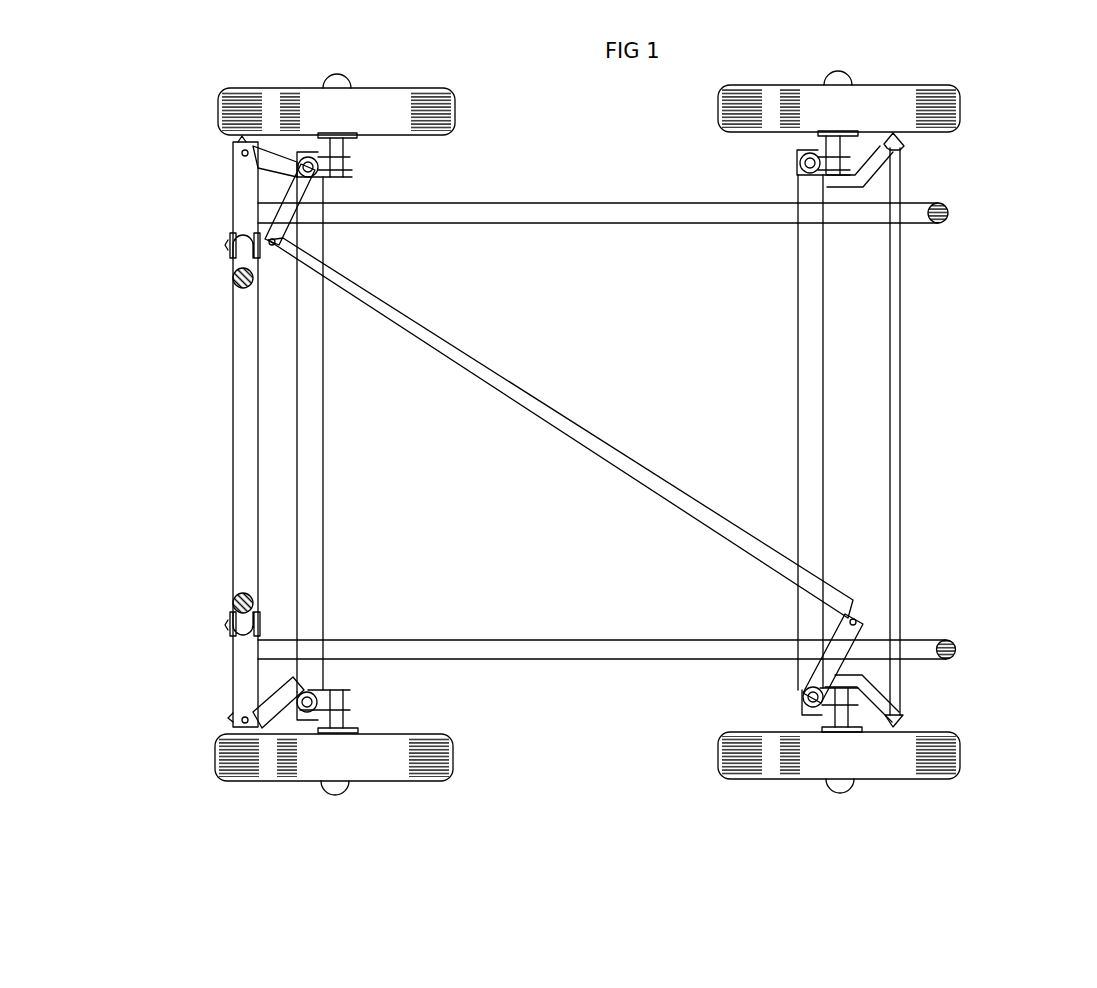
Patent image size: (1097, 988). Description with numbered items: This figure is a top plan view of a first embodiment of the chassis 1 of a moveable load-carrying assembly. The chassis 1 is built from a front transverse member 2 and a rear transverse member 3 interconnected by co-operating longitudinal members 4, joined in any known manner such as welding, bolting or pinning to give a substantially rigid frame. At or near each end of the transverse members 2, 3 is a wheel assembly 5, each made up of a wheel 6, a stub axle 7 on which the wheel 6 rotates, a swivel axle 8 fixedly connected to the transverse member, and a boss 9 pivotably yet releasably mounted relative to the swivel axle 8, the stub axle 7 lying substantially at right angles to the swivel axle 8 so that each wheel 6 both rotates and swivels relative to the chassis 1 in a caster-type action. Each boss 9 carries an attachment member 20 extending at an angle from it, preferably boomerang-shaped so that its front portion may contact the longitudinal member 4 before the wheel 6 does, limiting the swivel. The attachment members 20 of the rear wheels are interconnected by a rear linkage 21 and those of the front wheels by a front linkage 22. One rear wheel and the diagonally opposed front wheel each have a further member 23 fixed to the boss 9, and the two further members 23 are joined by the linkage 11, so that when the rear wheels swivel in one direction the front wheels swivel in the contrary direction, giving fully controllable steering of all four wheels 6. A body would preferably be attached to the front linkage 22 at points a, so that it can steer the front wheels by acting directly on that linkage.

The chassis 1 is at (185, 527).
The front transverse member 2 is at (305, 430).
The rear transverse member 3 is at (820, 316).
The longitudinal member 4 is at (580, 208).
The wheel assembly 5 is at (178, 145).
The wheel 6 is at (270, 105).
The stub axle 7 is at (333, 147).
The swivel axle 8 is at (200, 190).
The boss 9 is at (286, 828).
The linkage 11 is at (679, 428).
The attachment member 20 is at (280, 690).
The rear linkage 21 is at (900, 466).
The front linkage 22 is at (243, 483).
The further member 23 is at (855, 655).
The attachment points a is at (228, 277).